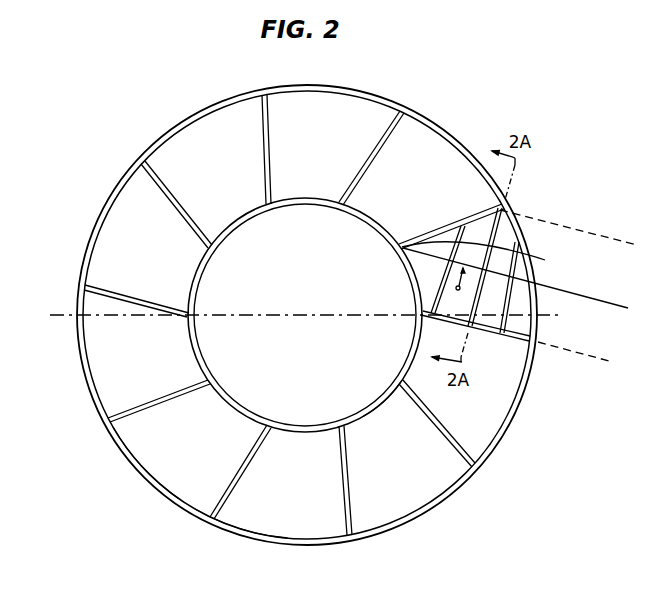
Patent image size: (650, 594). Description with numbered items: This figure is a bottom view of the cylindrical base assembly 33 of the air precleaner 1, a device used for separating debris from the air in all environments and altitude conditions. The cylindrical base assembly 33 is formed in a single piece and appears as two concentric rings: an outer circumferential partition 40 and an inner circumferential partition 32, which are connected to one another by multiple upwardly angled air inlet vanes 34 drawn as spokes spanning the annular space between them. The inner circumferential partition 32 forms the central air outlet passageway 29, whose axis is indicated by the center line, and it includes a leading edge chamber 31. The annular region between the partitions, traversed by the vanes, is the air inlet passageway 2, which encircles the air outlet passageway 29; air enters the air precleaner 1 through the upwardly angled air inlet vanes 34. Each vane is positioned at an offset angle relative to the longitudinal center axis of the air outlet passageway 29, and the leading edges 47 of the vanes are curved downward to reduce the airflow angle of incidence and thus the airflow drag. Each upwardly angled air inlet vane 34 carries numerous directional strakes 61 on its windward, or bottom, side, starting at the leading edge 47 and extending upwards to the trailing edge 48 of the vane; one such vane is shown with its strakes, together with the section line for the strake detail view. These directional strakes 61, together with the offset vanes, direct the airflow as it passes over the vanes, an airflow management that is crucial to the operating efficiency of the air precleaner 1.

The air precleaner 1 is at (233, 536).
The air inlet passageway 2 is at (355, 540).
The air outlet passageway 29 is at (301, 313).
The leading edge chamber 31 is at (376, 394).
The inner circumferential partition 32 is at (218, 258).
The cylindrical base assembly 33 is at (396, 99).
The upwardly angled air inlet vane 34 is at (413, 477).
The outer circumferential partition 40 is at (138, 469).
The leading edge 47 is at (153, 186).
The trailing edge 48 is at (78, 291).
The directional strake 61 is at (519, 270).